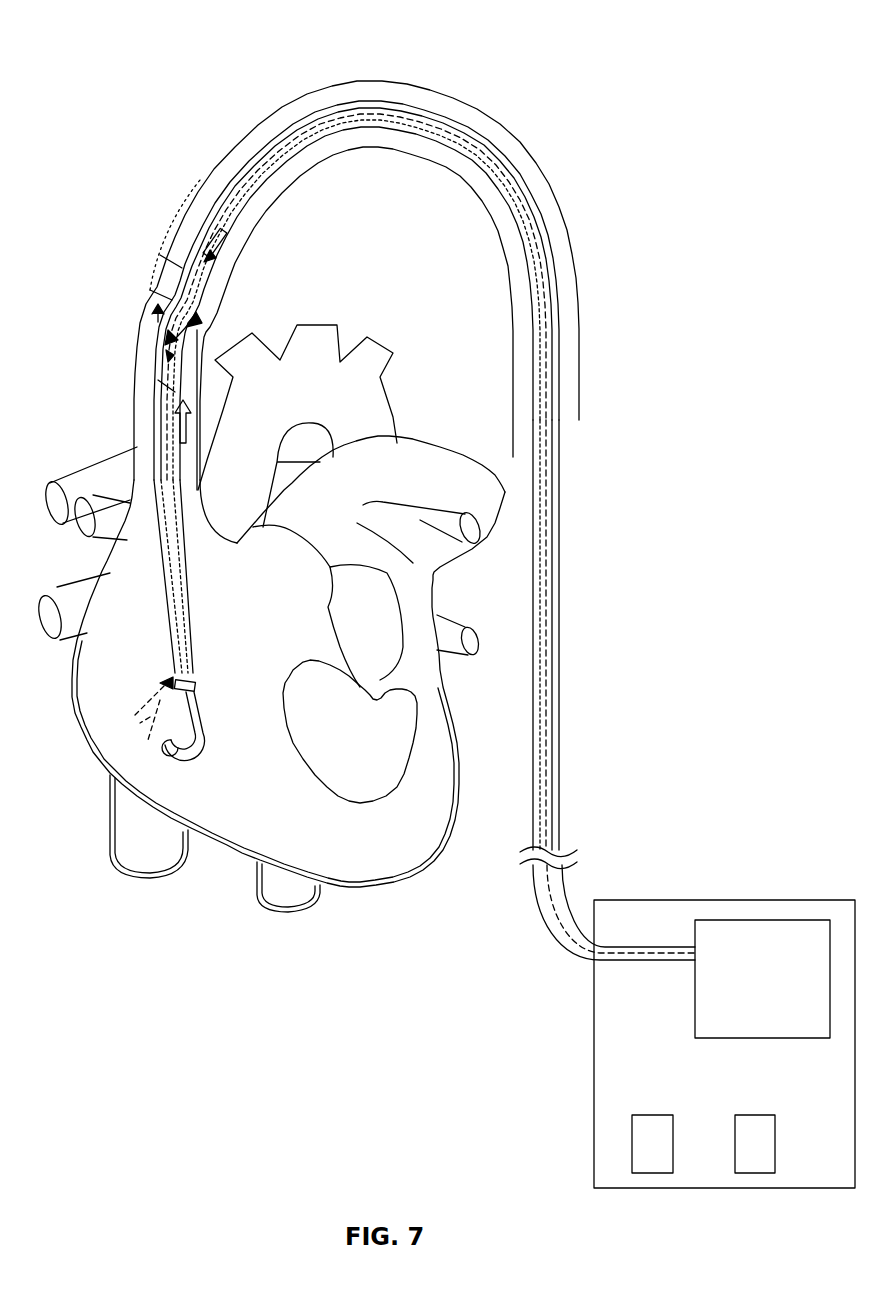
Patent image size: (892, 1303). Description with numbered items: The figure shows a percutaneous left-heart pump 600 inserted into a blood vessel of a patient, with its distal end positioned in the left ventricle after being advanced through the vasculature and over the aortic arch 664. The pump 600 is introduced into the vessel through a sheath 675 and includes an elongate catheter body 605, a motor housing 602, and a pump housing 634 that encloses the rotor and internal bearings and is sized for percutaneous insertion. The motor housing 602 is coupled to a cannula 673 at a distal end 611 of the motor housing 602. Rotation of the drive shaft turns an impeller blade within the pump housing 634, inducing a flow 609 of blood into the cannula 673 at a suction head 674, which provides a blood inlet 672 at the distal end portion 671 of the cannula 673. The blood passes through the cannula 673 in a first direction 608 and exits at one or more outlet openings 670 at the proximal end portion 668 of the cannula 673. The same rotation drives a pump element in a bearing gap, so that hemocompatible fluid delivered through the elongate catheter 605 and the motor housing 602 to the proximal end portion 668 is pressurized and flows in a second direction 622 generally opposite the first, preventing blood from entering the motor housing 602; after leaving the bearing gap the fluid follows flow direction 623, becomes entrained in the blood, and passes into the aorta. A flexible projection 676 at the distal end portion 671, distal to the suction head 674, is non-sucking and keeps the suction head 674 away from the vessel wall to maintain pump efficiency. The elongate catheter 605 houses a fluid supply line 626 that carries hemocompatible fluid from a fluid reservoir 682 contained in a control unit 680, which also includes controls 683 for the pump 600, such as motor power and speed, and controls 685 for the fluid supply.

The percutaneous left-heart pump 600 is at (138, 575).
The motor housing 602 is at (170, 290).
The elongate catheter body 605 is at (234, 157).
The first direction 608 is at (192, 428).
The flow of blood 609 is at (218, 350).
The distal end of the motor housing 611 is at (158, 304).
The second direction 622 is at (218, 248).
The flow direction of hemocompatible fluid 623 is at (200, 320).
The fluid supply line 626 is at (550, 352).
The pump housing 634 is at (165, 340).
The aortic arch 664 is at (318, 86).
The proximal end portion of the cannula 668 is at (168, 360).
The outlet openings 670 is at (160, 388).
The distal end portion of the cannula 671 is at (196, 690).
The blood inlet 672 is at (145, 756).
The cannula 673 is at (185, 622).
The suction head 674 is at (195, 680).
The sheath 675 is at (293, 150).
The flexible projection 676 is at (205, 735).
The control unit 680 is at (605, 1043).
The fluid reservoir 682 is at (762, 936).
The controls for the pump 683 is at (660, 1163).
The controls for the fluid supply 685 is at (755, 1163).